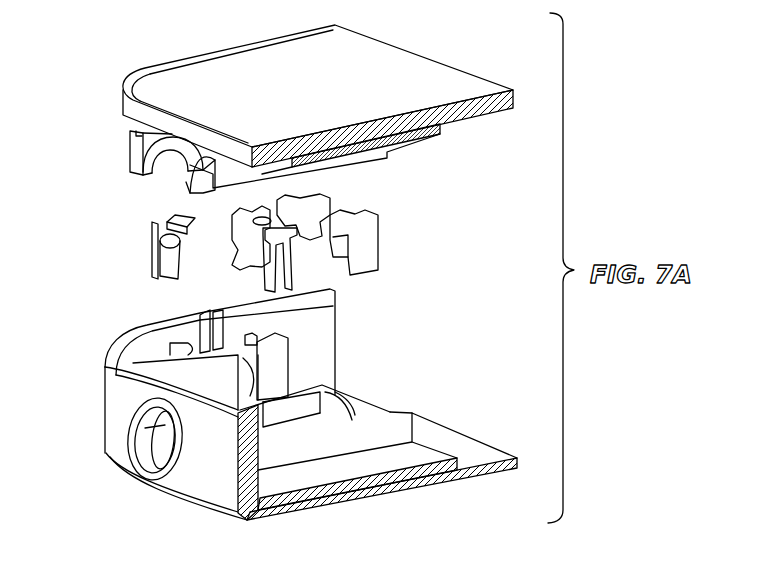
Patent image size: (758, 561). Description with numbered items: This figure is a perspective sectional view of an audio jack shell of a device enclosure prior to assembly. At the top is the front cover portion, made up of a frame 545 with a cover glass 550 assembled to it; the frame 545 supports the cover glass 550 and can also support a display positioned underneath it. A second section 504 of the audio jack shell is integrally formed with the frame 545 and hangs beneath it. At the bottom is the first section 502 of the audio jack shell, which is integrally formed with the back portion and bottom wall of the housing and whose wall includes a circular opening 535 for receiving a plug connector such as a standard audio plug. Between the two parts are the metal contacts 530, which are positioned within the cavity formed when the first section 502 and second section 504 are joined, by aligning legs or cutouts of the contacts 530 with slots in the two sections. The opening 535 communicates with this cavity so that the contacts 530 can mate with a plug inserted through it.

The frame 545 is at (125, 84).
The cover glass 550 is at (438, 78).
The second section 504 is at (350, 162).
The contacts 530 is at (355, 242).
The first section 502 is at (397, 427).
The circular opening 535 is at (160, 447).